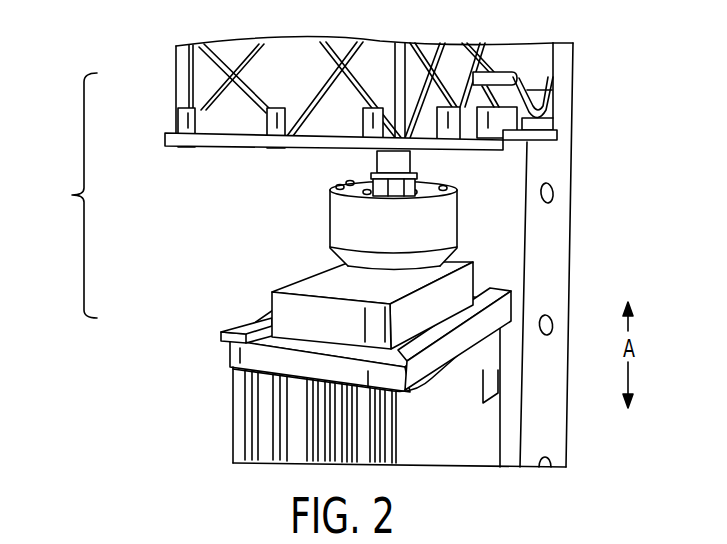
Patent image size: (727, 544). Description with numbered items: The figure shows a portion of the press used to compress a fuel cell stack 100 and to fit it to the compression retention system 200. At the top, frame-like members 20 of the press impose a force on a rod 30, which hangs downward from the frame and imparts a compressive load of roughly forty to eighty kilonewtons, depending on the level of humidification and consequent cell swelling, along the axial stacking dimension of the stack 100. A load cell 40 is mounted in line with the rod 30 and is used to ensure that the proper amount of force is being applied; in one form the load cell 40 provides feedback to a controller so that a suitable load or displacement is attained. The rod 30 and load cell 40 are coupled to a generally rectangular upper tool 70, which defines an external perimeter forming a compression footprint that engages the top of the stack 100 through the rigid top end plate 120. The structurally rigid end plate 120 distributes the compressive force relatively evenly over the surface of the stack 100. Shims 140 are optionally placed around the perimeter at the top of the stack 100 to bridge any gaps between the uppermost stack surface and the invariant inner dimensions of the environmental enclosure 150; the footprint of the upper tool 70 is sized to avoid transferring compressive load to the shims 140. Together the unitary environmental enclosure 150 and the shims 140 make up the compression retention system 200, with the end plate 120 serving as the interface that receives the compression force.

The frame-like member 20 is at (575, 157).
The rod 30 is at (372, 155).
The load cell 40 is at (329, 228).
The upper tool 70 is at (290, 309).
The fuel cell stack 100 is at (220, 411).
The end plate 120 is at (232, 358).
The shims 140 is at (226, 337).
The environmental enclosure 150 is at (177, 77).
The compression retention system 200 is at (67, 195).